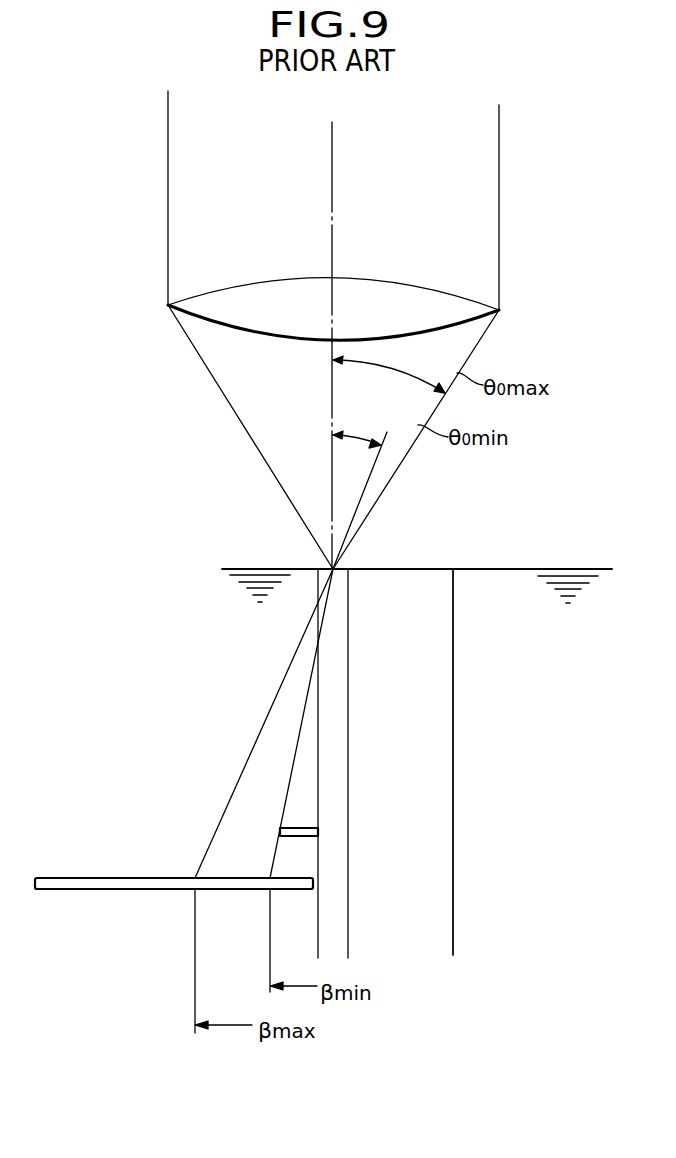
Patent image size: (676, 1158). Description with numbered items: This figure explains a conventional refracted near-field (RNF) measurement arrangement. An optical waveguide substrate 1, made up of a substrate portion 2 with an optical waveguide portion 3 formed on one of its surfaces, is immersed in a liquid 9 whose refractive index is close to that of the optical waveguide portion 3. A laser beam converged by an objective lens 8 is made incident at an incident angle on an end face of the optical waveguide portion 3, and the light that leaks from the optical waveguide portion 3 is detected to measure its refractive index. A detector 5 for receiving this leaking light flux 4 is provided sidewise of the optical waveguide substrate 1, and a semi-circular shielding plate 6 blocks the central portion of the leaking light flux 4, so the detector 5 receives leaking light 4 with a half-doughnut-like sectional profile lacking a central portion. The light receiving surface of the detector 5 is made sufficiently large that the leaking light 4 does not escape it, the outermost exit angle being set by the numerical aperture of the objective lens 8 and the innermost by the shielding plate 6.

The optical waveguide substrate 1 is at (460, 638).
The substrate portion 2 is at (435, 705).
The optical waveguide portion 3 is at (343, 895).
The leaking light flux 4 is at (265, 733).
The detector 5 is at (98, 878).
The semi-circular shielding plate 6 is at (293, 827).
The objective lens 8 is at (472, 305).
The liquid 9 is at (260, 569).